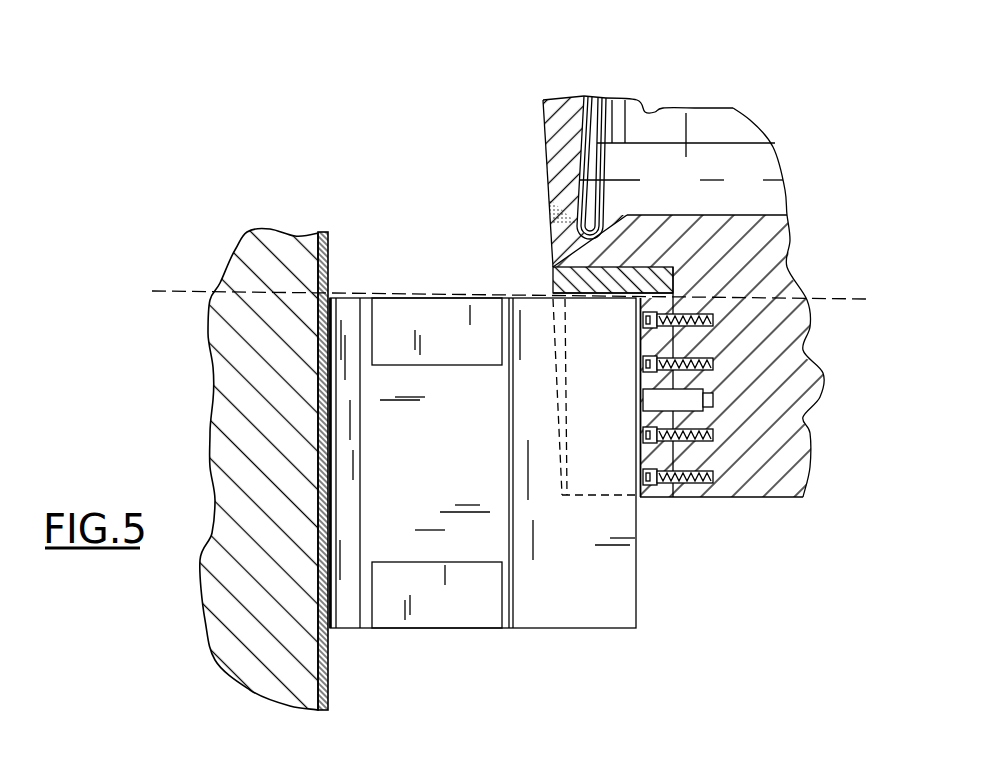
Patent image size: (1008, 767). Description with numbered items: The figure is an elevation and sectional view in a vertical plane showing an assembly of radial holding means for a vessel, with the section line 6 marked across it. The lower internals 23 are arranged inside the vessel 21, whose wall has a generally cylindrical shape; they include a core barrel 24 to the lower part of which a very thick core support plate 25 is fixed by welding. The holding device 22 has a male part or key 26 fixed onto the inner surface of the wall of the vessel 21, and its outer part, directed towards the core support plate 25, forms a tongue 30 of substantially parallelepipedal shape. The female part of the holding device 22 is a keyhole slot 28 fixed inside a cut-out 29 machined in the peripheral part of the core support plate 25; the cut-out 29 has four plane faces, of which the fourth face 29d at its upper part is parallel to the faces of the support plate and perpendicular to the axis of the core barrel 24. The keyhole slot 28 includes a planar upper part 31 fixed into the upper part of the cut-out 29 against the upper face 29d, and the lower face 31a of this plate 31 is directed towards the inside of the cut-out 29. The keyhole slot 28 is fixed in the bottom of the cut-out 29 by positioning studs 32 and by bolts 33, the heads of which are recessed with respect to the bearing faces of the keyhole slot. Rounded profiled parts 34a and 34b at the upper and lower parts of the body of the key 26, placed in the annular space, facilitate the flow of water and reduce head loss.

The section line 6- 6 is at (163, 282).
The vessel 21 is at (223, 410).
The holding device 22 is at (650, 624).
The lower internals 23 is at (636, 85).
The core barrel 24 is at (558, 133).
The core support plate 25 is at (785, 460).
The key 26 is at (493, 540).
The keyhole slot 28 is at (647, 389).
The cut-out 29 is at (688, 265).
The fourth face 29d is at (643, 263).
The tongue 30 is at (618, 570).
The planar upper part 31 is at (568, 282).
The lower face 31a is at (602, 295).
The positioning studs 32 is at (641, 403).
The bolts 33 is at (657, 317).
The profiled part 34a is at (407, 312).
The profiled part 34b is at (428, 615).